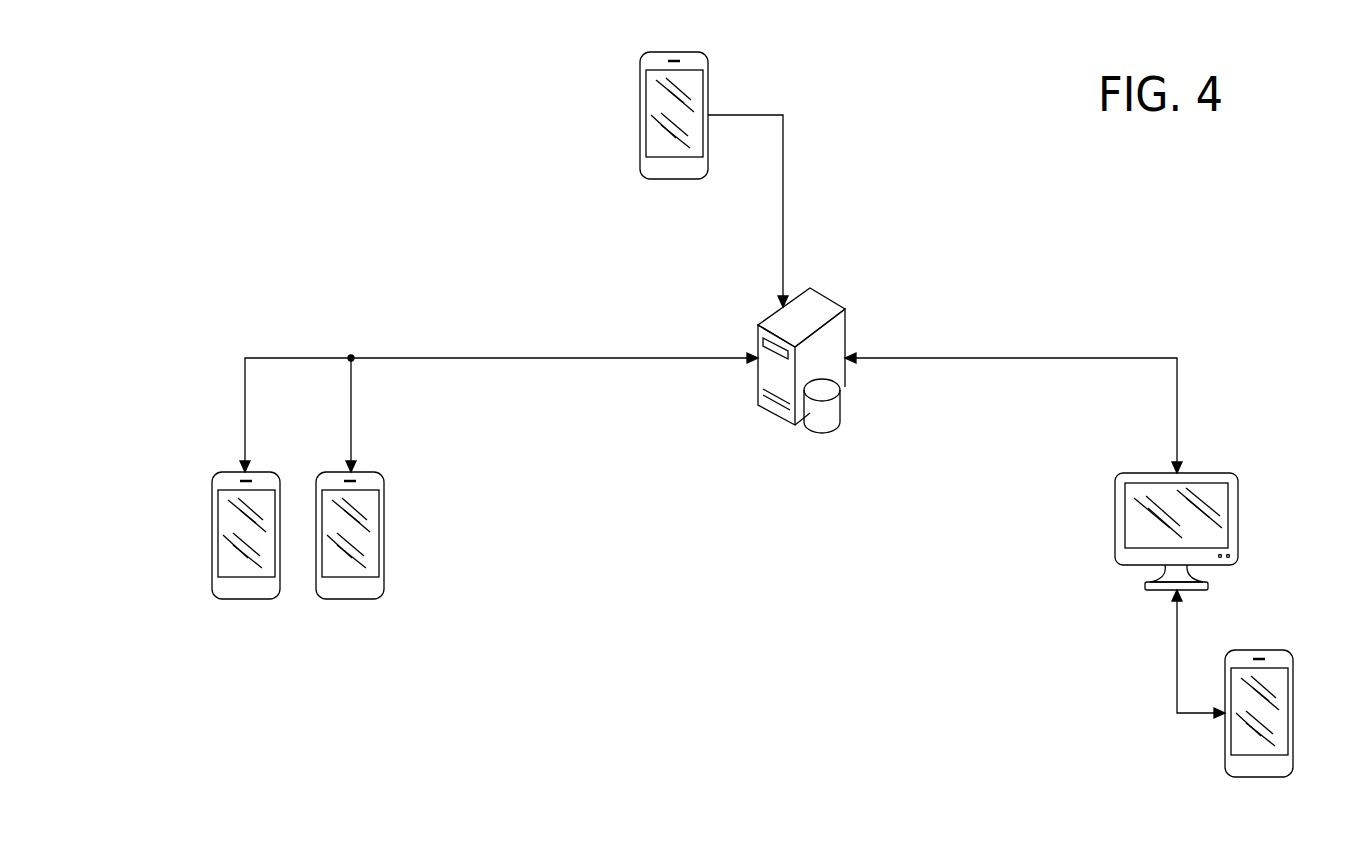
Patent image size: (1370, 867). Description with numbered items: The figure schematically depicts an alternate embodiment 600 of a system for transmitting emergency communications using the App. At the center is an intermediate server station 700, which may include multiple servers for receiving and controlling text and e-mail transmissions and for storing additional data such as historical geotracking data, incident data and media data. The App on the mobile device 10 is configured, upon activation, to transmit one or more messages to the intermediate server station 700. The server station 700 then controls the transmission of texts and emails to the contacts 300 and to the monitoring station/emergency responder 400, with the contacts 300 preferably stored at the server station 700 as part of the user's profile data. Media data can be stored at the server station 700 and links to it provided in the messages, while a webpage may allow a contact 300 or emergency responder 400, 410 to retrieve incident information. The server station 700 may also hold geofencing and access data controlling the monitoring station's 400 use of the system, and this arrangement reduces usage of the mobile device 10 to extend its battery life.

The mobile device 10 is at (640, 100).
The contacts 300 is at (212, 518).
The monitoring station/emergency responder 400 is at (1238, 515).
The emergency responder 410 is at (1295, 706).
The embodiment 600 is at (397, 170).
The intermediate server station 700 is at (827, 292).